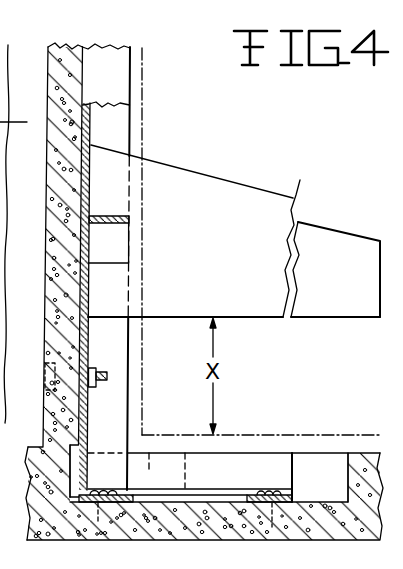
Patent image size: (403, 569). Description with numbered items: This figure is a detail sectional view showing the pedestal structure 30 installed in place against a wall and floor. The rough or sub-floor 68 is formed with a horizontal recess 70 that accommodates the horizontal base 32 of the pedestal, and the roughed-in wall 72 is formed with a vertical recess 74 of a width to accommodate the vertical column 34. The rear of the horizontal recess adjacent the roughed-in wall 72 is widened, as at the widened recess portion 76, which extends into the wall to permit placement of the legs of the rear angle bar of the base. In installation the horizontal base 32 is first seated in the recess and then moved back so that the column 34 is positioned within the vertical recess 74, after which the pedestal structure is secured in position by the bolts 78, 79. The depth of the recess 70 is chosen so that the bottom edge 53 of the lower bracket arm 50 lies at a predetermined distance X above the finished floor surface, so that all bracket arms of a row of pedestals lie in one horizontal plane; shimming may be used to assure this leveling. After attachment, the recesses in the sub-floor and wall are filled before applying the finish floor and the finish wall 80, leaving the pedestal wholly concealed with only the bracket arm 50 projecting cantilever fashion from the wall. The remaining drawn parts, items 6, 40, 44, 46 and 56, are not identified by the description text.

The wall footing 6 is at (70, 471).
The pedestal structure 30 is at (185, 150).
The horizontal base 32 is at (237, 467).
The vertical column 34 is at (108, 130).
The floor channel 40 is at (192, 447).
The base plate 44 is at (292, 500).
The seam 46 is at (103, 104).
The lower bracket arm 50 is at (278, 201).
The bottom edge 53 is at (306, 318).
The shelf panel 56 is at (112, 240).
The sub-floor 68 is at (338, 527).
The horizontal recess 70 is at (308, 470).
The roughed-in wall 72 is at (61, 60).
The vertical recess 74 is at (112, 66).
The widened recess portion 76 is at (150, 445).
The bolt 78 is at (98, 367).
The bolt 79 is at (277, 489).
The finish wall 80 is at (144, 92).